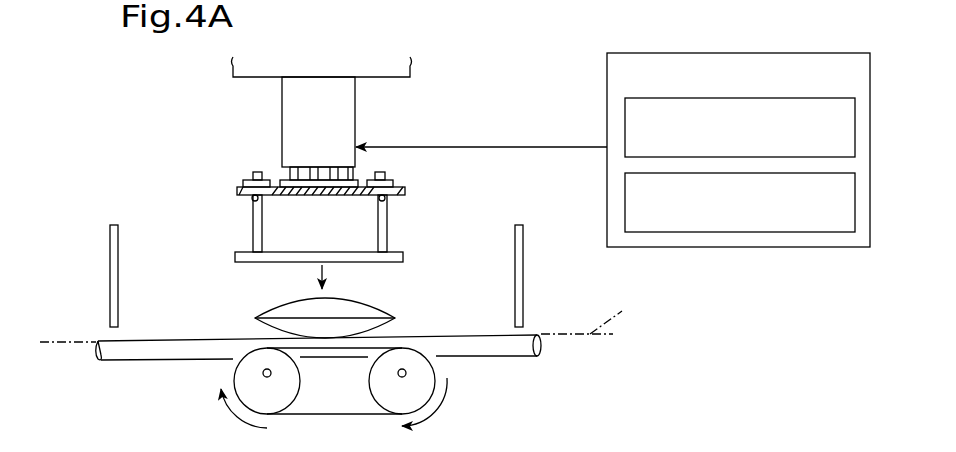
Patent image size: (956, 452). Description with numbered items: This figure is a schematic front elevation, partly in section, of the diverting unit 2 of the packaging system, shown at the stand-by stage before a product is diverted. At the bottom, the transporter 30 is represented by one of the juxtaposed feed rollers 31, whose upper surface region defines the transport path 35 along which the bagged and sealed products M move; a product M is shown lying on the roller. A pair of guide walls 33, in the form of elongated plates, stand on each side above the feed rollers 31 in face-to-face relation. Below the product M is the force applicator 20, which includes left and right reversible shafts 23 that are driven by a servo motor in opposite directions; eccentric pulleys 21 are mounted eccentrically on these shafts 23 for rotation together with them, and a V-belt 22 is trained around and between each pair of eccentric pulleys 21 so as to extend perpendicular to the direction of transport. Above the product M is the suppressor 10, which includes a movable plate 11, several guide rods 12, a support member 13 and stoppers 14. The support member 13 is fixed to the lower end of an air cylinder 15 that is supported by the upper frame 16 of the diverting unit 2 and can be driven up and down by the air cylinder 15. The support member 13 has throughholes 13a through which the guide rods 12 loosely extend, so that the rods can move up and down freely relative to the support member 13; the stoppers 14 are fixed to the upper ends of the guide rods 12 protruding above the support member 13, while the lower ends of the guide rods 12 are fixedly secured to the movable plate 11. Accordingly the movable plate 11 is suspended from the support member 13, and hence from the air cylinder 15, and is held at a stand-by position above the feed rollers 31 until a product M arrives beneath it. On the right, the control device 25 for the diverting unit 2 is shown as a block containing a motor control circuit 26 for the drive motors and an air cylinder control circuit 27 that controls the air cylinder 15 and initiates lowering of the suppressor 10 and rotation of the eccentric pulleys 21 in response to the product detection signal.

The diverting unit 2 is at (198, 86).
The suppressor 10 is at (463, 143).
The movable plate 11 is at (403, 258).
The guide rods 12 is at (253, 226).
The support member 13 is at (402, 188).
The throughholes 13a is at (252, 198).
The stoppers 14 is at (246, 181).
The air cylinder 15 is at (282, 108).
The upper frame 16 is at (392, 79).
The force applicator 20 is at (338, 375).
The eccentric pulleys 21 is at (245, 372).
The V-belt 22 is at (318, 414).
The reversible shafts 23 is at (264, 370).
The control device 25 is at (650, 53).
The motor control circuit 26 is at (625, 110).
The air cylinder control circuit 27 is at (625, 200).
The transporter 30 is at (347, 324).
The feed rollers 31 is at (541, 347).
The guide walls 33 is at (110, 244).
The transport path 35 is at (528, 334).
The bagged and sealed products M is at (373, 305).